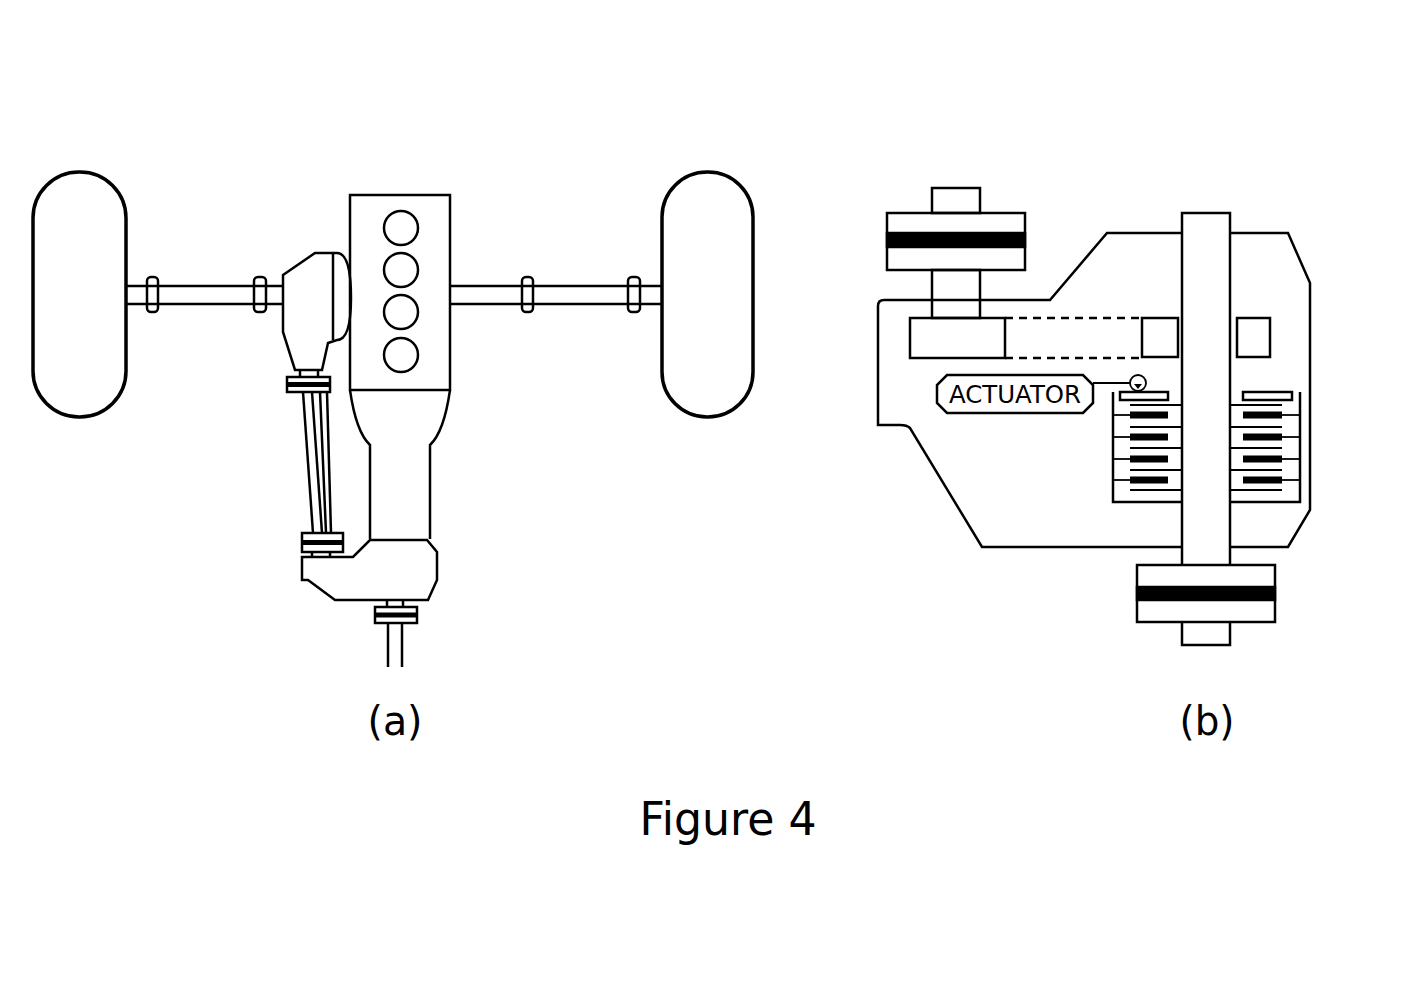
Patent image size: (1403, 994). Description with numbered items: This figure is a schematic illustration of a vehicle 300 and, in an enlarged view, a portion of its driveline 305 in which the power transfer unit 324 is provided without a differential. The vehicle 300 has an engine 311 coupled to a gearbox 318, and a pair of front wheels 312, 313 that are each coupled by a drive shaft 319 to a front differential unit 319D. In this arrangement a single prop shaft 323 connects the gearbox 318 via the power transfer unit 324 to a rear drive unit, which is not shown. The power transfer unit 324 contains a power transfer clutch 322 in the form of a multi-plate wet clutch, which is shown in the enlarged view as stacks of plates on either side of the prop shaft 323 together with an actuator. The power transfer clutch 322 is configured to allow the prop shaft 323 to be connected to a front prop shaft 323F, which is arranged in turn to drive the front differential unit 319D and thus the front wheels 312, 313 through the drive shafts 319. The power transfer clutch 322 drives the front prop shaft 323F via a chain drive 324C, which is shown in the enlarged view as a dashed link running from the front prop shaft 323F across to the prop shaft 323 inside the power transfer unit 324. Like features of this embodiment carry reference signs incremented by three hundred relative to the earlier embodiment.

The vehicle 300 is at (568, 113).
The driveline 305 is at (586, 530).
The engine 311 is at (432, 215).
The front wheel 312 is at (80, 205).
The front wheel 313 is at (707, 203).
The gearbox 318 is at (418, 485).
The drive shaft 319 is at (215, 292).
The front differential unit 319D is at (315, 252).
The power transfer clutch 322 is at (1293, 427).
The prop shaft 323 is at (395, 635).
The front prop shaft 323F is at (313, 448).
The power transfer unit 324 is at (437, 557).
The chain drive 324C is at (1028, 318).